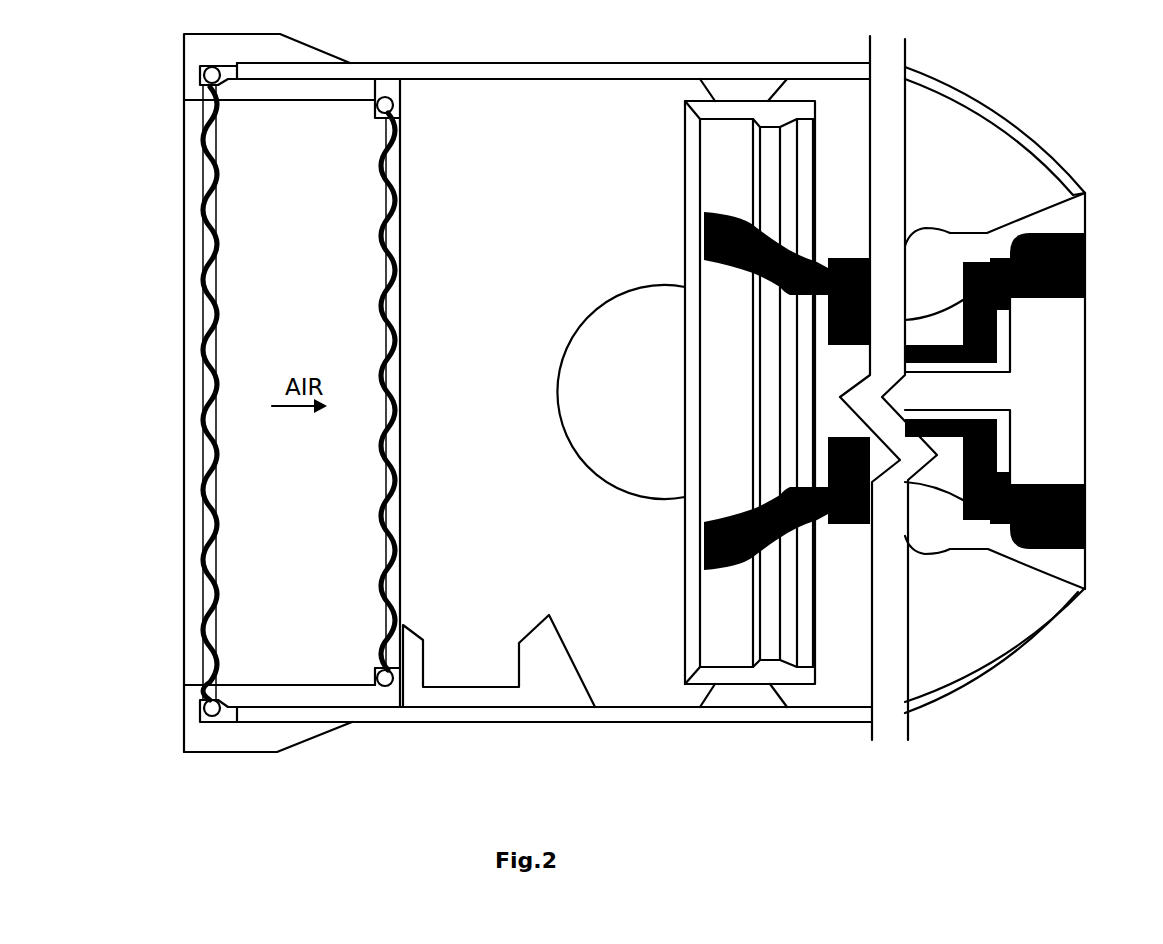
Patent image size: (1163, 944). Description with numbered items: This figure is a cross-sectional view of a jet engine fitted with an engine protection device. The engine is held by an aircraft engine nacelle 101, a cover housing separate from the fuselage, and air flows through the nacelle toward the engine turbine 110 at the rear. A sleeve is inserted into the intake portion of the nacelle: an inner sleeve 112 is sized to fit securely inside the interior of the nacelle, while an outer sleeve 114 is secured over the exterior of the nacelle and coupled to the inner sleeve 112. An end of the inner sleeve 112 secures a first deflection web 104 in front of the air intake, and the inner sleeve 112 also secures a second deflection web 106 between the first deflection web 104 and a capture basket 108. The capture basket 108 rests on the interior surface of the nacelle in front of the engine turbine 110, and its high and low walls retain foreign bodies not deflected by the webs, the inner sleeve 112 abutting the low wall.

The aircraft engine nacelle 101 is at (755, 722).
The first deflection web 104 is at (203, 172).
The second deflection web 106 is at (230, 753).
The capture basket 108 is at (555, 690).
The engine turbine 110 is at (748, 646).
The inner sleeve 112 is at (263, 685).
The outer sleeve 114 is at (184, 48).